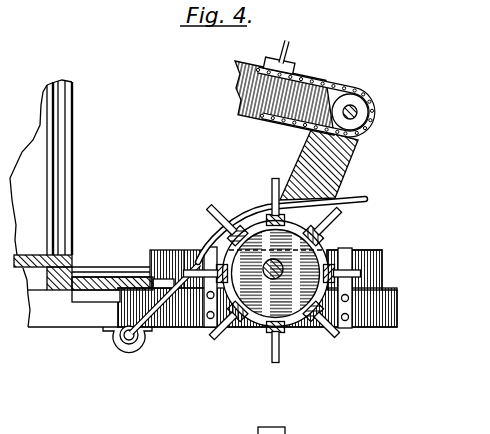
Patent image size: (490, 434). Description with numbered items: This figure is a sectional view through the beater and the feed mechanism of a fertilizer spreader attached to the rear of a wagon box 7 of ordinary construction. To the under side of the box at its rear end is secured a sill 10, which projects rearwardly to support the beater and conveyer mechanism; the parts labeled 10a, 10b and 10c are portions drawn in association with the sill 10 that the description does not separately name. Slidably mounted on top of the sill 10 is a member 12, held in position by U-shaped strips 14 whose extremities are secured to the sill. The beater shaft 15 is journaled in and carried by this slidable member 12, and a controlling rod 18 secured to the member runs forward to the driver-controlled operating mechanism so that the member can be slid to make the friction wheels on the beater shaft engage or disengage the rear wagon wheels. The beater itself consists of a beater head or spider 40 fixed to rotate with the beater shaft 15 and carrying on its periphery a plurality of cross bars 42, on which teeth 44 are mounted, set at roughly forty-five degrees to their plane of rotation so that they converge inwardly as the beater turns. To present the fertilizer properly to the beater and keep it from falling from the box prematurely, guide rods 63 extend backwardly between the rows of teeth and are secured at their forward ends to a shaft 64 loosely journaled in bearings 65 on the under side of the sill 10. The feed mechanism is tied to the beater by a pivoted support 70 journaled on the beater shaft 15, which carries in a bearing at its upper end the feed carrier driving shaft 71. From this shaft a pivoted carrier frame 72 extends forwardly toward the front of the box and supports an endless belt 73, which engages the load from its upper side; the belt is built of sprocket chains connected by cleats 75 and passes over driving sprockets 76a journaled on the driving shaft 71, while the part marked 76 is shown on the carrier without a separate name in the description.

The wagon box 7 is at (41, 167).
The sill 10 is at (78, 314).
The frame block 10a is at (92, 296).
The frame bar 10b is at (108, 292).
The frame block 10c is at (161, 276).
The slidably mounted member 12 is at (375, 253).
The U-shaped strip 14 is at (202, 248).
The beater shaft 15 is at (277, 280).
The controlling rod 18 is at (97, 253).
The beater head 40 is at (288, 305).
The cross bar 42 is at (256, 330).
The tooth 44 is at (270, 177).
The guide rod 63 is at (262, 212).
The shaft 64 is at (143, 343).
The bearing 65 is at (132, 347).
The pivoted support 70 is at (305, 162).
The feed carrier driving shaft 71 is at (358, 115).
The pivoted carrier frame 72 is at (253, 85).
The endless belt 73 is at (337, 84).
The cleat 75 is at (291, 60).
The pin 76 is at (279, 58).
The driving sprocket 76a is at (374, 107).